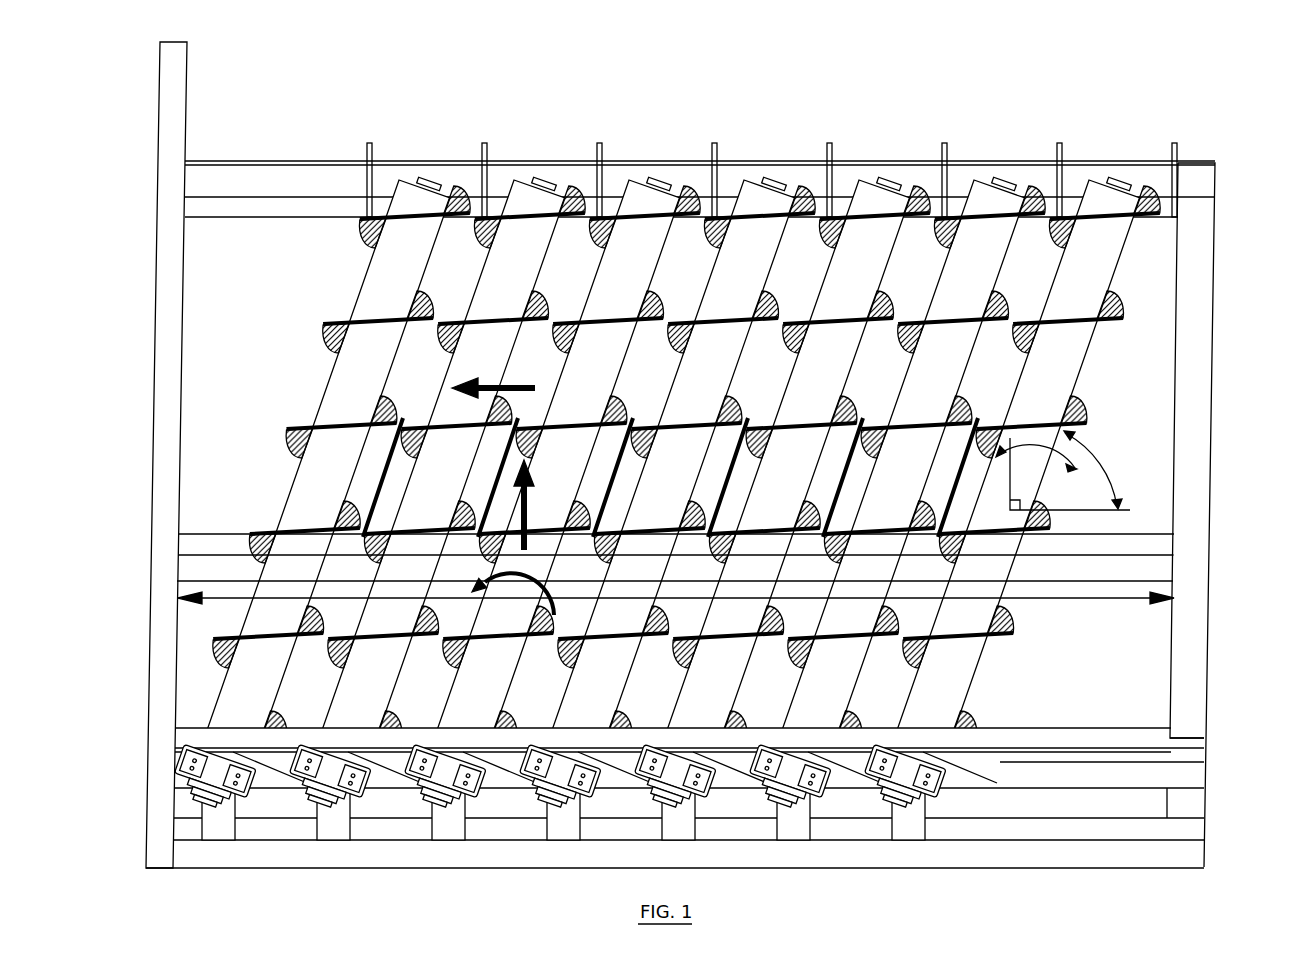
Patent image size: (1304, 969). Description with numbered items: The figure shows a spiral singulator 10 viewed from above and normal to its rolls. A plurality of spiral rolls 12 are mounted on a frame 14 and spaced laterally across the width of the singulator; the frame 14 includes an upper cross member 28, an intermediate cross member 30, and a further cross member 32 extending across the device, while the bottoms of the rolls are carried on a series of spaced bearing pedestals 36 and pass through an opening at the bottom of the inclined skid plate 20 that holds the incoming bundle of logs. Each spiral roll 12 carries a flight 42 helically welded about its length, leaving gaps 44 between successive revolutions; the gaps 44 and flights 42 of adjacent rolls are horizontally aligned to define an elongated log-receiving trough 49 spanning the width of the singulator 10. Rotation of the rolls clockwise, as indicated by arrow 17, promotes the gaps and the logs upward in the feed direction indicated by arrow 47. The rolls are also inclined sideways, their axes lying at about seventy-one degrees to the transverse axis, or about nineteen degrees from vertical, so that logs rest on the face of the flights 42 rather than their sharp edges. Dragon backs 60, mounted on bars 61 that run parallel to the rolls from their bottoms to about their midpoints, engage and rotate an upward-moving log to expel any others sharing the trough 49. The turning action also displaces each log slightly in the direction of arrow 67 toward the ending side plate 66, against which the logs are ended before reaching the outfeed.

The spiral singulator 10 is at (972, 93).
The spiral rolls 12 is at (411, 196).
The frame 14 is at (1212, 263).
The arrow indicating clockwise rotation 17 is at (519, 583).
The inclined skid plate 20 is at (1122, 735).
The upper cross member 28 is at (285, 176).
The intermediate cross member 30 is at (1183, 748).
The cross member 32 is at (1183, 826).
The bearing pedestals 36 is at (913, 822).
The flight 42 is at (1093, 305).
The gaps 44 is at (1072, 368).
The feed direction arrow 47 is at (528, 512).
The log-receiving trough 49 is at (1070, 603).
The dragon backs 60 is at (846, 470).
The bars 61 is at (905, 690).
The ending side plate 66 is at (178, 134).
The arrow indicating lateral displacement 67 is at (500, 390).